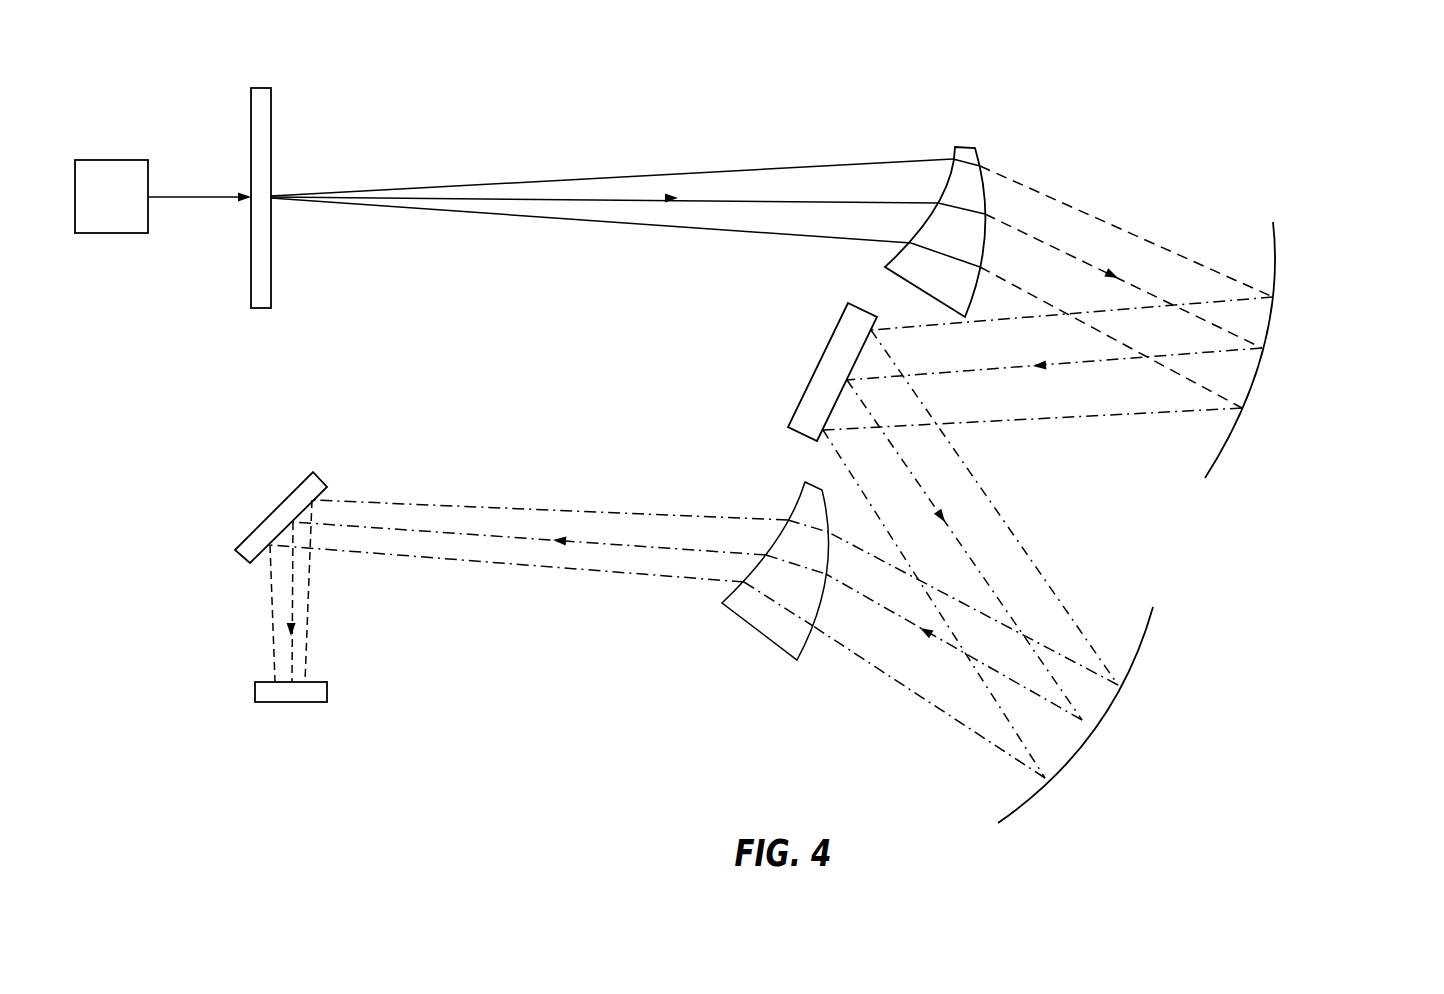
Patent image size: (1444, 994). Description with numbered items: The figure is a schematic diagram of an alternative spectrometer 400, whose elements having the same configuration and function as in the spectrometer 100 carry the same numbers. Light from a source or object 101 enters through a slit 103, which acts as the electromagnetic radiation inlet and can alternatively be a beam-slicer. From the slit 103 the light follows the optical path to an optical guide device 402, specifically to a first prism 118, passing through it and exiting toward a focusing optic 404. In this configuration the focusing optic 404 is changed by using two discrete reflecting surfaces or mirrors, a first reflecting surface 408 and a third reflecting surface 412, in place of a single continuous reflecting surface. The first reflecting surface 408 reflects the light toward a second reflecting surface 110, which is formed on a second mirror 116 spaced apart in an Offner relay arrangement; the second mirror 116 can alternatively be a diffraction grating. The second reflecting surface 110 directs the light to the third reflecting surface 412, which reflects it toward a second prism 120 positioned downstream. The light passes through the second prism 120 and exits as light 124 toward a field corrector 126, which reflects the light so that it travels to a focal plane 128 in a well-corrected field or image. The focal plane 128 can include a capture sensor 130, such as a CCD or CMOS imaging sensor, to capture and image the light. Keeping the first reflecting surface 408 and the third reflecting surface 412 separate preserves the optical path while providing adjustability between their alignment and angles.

The spectrometer 100 is at (160, 199).
The source or object 101 is at (111, 196).
The slit 103 is at (262, 165).
The second reflecting surface 110 is at (838, 405).
The second mirror 116 is at (845, 355).
The first prism 118 is at (957, 149).
The second prism 120 is at (803, 510).
The output beam 124 is at (325, 490).
The field corrector 126 is at (273, 527).
The focal plane 128 is at (273, 695).
The capture sensor 130 is at (291, 692).
The spectrometer 400 is at (367, 42).
The optical guide device 402 is at (876, 117).
The focusing optic 404 is at (792, 346).
The first reflecting surface 408 is at (1257, 387).
The third reflecting surface 412 is at (1113, 702).